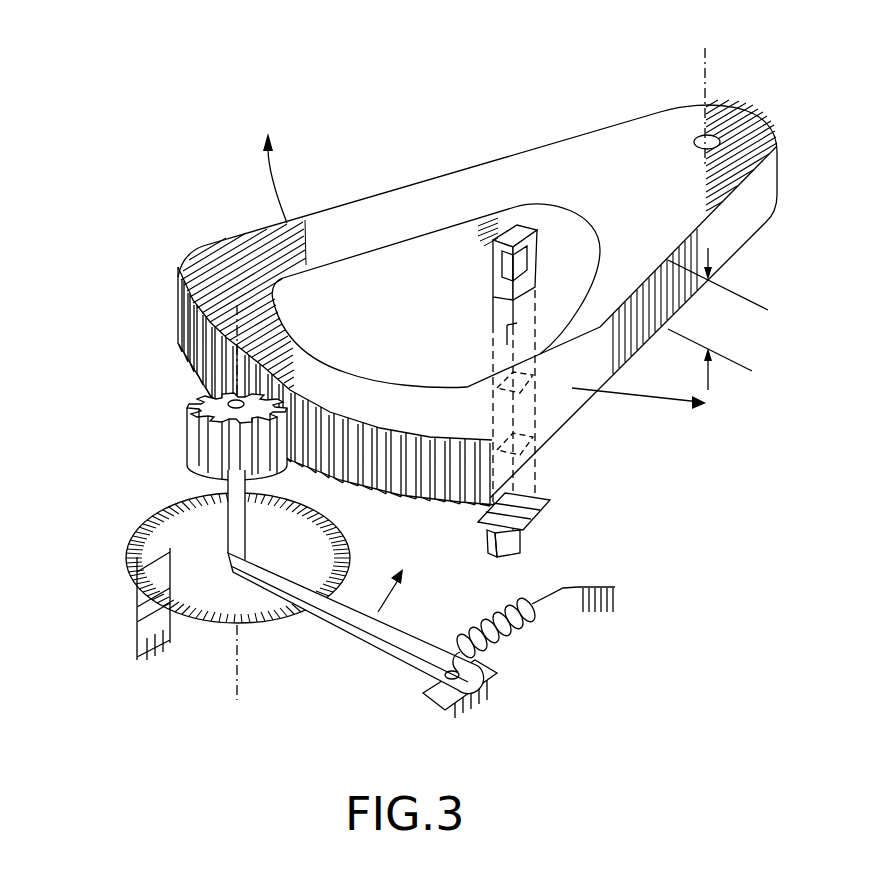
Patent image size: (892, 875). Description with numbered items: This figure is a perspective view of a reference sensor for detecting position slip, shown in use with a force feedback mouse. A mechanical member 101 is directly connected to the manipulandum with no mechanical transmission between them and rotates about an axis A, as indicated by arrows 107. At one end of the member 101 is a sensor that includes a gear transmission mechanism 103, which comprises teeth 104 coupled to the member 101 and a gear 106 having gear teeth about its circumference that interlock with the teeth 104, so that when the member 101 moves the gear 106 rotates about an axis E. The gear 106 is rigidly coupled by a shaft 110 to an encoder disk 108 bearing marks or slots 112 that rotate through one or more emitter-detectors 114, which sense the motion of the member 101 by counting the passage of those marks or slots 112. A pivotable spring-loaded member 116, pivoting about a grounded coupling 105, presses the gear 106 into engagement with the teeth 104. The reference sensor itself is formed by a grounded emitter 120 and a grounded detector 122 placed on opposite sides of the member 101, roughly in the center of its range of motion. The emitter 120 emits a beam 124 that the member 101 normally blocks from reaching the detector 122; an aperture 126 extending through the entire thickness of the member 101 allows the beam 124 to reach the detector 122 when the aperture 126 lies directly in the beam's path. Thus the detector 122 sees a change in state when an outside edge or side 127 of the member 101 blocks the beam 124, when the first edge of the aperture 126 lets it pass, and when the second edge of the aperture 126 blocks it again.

The mechanical member 101 is at (744, 234).
The gear transmission mechanism 103 is at (246, 415).
The teeth 104 is at (187, 346).
The grounded coupling 105 is at (479, 673).
The gear 106 is at (188, 446).
The arrows 107 is at (283, 178).
The encoder disk 108 is at (348, 525).
The shaft 110 is at (197, 500).
The marks or slots 112 is at (135, 553).
The emitter-detectors 114 is at (130, 639).
The pivotable spring-loaded member 116 is at (414, 656).
The grounded emitter 120 is at (526, 254).
The grounded detector 122 is at (545, 506).
The beam 124 is at (504, 369).
The aperture 126 is at (530, 388).
The outside edge or side 127 is at (204, 243).